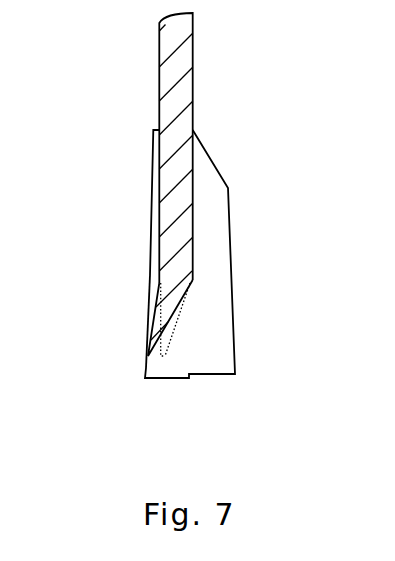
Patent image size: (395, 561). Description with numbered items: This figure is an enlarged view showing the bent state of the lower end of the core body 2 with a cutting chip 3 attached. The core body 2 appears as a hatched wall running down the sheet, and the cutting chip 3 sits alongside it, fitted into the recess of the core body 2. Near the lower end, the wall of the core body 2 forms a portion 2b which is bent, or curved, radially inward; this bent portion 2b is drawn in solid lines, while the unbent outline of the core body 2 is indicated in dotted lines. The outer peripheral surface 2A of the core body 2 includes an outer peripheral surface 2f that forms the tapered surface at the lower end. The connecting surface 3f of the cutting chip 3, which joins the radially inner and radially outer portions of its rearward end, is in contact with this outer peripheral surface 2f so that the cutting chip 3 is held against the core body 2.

The core body 2 is at (193, 51).
The cutting chip 3 is at (218, 231).
The connecting surface 3f is at (180, 311).
The portion of the core body wall adjacent to the recess 2b is at (167, 318).
The outer peripheral surface 2A is at (170, 316).
The outer peripheral surface adjacent to the recess 2f is at (170, 330).